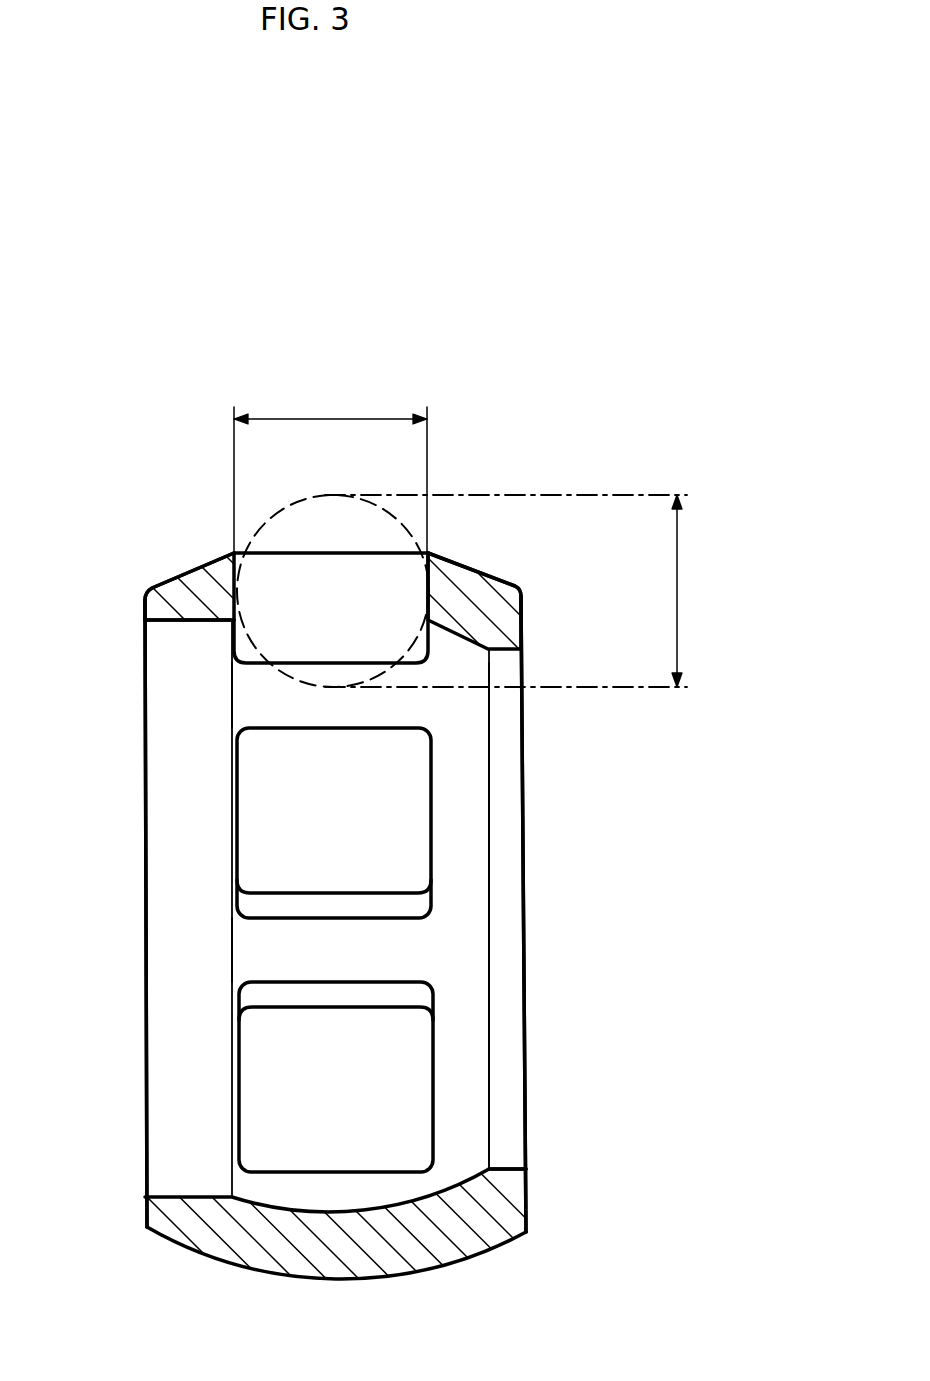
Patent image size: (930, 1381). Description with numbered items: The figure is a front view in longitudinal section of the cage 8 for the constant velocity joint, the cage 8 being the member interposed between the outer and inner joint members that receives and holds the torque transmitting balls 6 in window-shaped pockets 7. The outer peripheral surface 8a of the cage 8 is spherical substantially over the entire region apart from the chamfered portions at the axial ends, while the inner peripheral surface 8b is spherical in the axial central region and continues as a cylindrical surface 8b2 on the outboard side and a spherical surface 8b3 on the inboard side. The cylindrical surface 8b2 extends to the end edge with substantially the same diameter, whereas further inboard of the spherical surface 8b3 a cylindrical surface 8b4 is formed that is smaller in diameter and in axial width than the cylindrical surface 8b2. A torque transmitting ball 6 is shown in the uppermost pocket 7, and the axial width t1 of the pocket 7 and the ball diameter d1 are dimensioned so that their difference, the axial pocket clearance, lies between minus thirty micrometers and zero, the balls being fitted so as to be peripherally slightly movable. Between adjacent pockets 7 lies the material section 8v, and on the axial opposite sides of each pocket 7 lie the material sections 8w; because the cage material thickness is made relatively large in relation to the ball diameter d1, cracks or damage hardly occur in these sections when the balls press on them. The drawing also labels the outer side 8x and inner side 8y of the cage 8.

The torque transmitting ball 6 is at (270, 518).
The pocket 7 is at (425, 588).
The cage 8 is at (527, 567).
The outer peripheral surface 8a is at (191, 569).
The inner peripheral surface 8b is at (345, 1214).
The cylindrical surface 8b2 is at (178, 622).
The spherical surface 8b3 is at (459, 638).
The cylindrical surface 8b4 is at (506, 1168).
The material section between pockets 8v is at (393, 707).
The material sections on axial opposite sides of each pocket 8w is at (470, 855).
The outer peripheral surface of cage 8x is at (534, 877).
The inner peripheral surface of cage 8y is at (145, 885).
The axial width of the pocket t1 is at (330, 468).
The diameter of the torque transmitting ball d1 is at (517, 591).